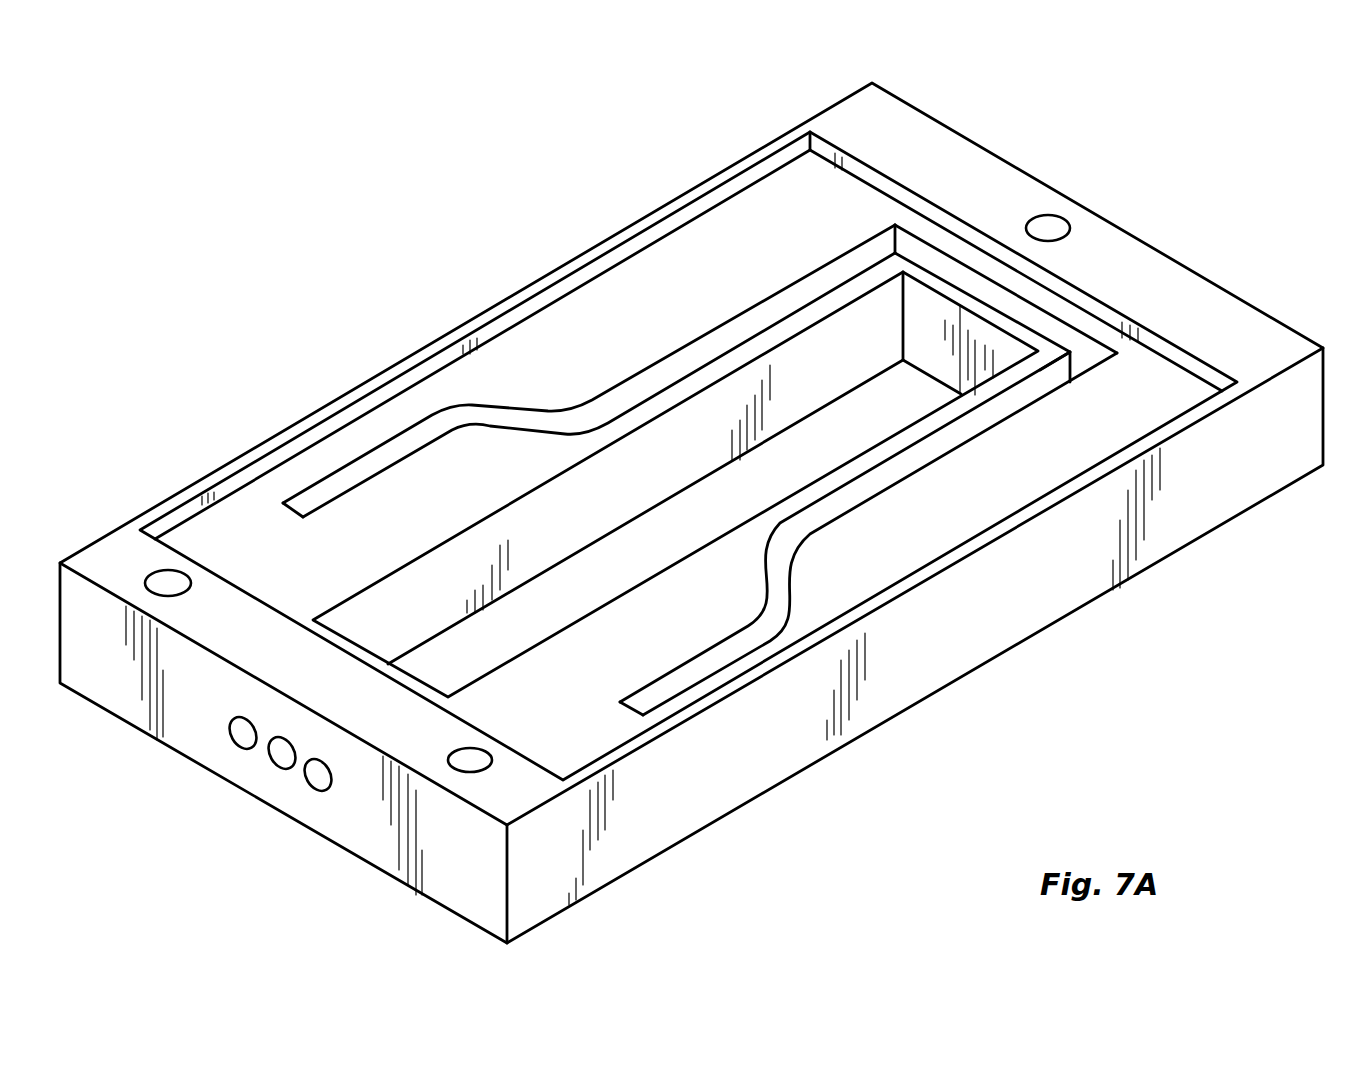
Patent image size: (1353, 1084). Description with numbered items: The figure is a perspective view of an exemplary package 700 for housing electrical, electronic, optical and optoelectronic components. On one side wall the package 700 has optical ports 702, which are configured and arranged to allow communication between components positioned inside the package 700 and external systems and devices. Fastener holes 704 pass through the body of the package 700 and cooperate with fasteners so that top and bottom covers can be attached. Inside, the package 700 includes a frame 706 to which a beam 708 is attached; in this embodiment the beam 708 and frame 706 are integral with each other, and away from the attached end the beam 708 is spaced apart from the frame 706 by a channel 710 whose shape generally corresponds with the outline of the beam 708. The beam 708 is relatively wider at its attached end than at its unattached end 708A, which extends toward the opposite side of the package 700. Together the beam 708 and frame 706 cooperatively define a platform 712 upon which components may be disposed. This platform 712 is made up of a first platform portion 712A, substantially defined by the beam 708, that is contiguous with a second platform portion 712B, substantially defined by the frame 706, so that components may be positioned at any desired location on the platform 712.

The package 700 is at (322, 338).
The optical ports 702 is at (307, 781).
The fastener holes 704 is at (157, 572).
The frame 706 is at (963, 497).
The beam 708 is at (668, 632).
The unattached end 708A is at (1050, 358).
The channel 710 is at (940, 258).
The platform 712 is at (700, 491).
The first platform portion 712A is at (827, 432).
The second platform portion 712B is at (476, 668).